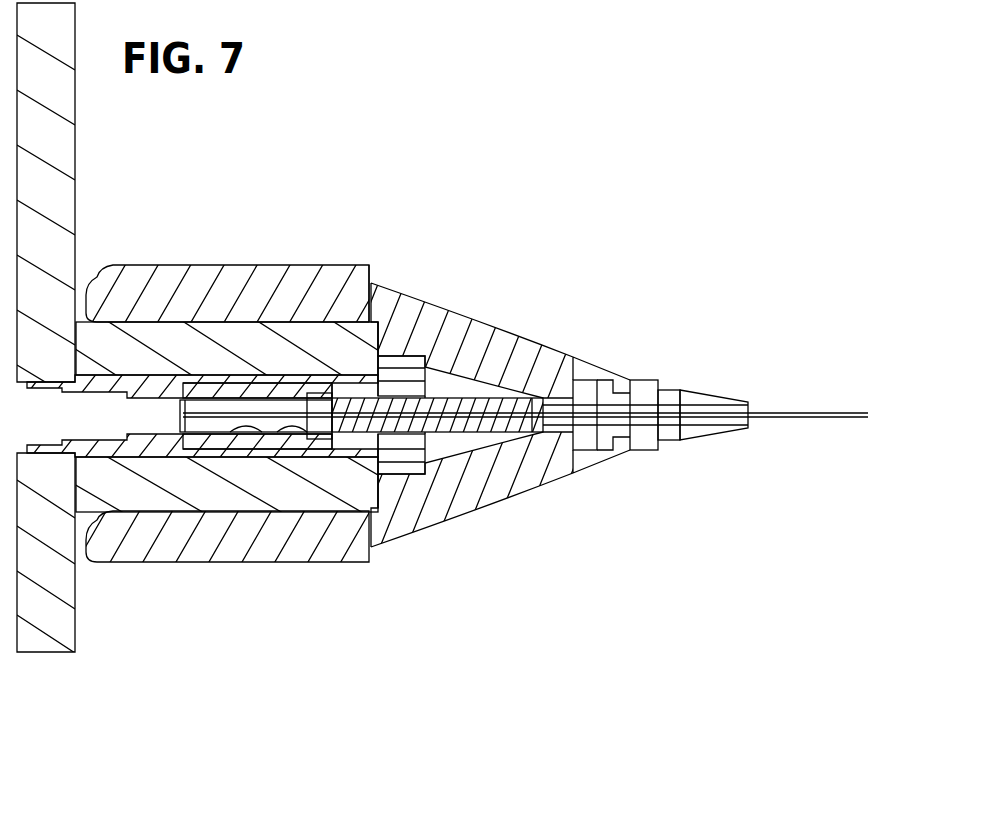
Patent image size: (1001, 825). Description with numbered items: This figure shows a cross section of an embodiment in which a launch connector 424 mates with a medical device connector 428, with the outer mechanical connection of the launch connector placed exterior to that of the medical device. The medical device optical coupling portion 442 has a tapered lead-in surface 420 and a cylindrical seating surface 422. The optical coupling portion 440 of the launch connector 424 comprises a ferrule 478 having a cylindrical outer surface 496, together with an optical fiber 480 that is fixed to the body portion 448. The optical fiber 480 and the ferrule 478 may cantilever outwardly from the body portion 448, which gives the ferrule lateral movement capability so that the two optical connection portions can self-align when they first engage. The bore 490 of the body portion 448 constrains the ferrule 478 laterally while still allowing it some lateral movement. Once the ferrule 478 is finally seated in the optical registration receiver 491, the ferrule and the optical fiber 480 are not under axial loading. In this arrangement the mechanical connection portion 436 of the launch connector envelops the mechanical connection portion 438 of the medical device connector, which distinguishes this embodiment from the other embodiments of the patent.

The tapered lead-in surface 420 is at (322, 505).
The cylindrical seating surface 422 is at (253, 457).
The launch connector 424 is at (530, 342).
The medical device connector 428 is at (133, 497).
The mechanical connection portion of the launch connector 436 is at (288, 552).
The mechanical connection portion of the medical device 438 is at (117, 480).
The optical coupling portion of the launch connector 440 is at (340, 348).
The medical device optical coupling portion 442 is at (190, 457).
The body portion 448 is at (481, 423).
The ferrule 478 is at (265, 400).
The optical fiber 480 is at (343, 443).
The bore 490 is at (372, 282).
The optical registration receiver 491 is at (177, 400).
The cylindrical outer surface 496 is at (225, 400).